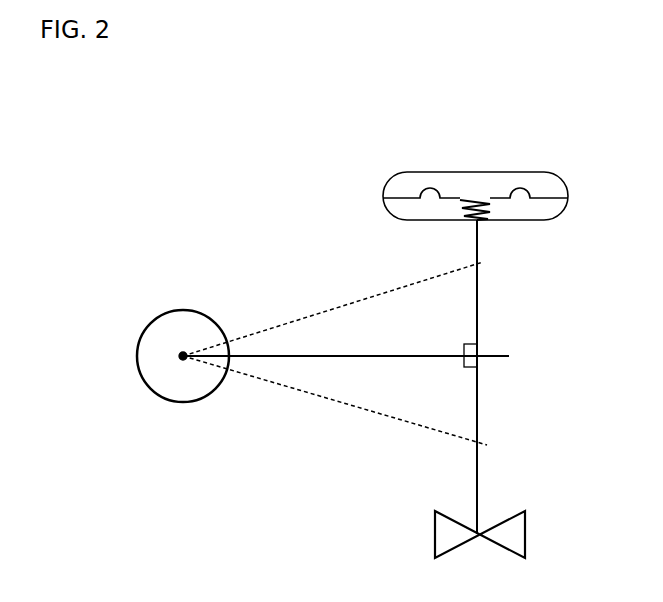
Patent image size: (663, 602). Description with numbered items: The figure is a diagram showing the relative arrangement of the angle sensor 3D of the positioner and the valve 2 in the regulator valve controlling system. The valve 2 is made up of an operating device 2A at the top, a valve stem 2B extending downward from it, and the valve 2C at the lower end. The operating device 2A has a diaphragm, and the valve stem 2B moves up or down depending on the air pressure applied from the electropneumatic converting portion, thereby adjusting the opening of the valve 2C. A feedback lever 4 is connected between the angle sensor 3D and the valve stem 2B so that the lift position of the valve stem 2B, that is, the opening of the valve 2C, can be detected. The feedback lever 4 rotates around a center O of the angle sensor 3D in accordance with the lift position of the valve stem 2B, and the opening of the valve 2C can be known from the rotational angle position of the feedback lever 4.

The valve 2 is at (491, 330).
The operating device 2A is at (552, 173).
The valve stem 2B is at (478, 310).
The valve 2C is at (520, 530).
The angle sensor 3D is at (200, 343).
The center O is at (180, 360).
The feedback lever 4 is at (371, 356).